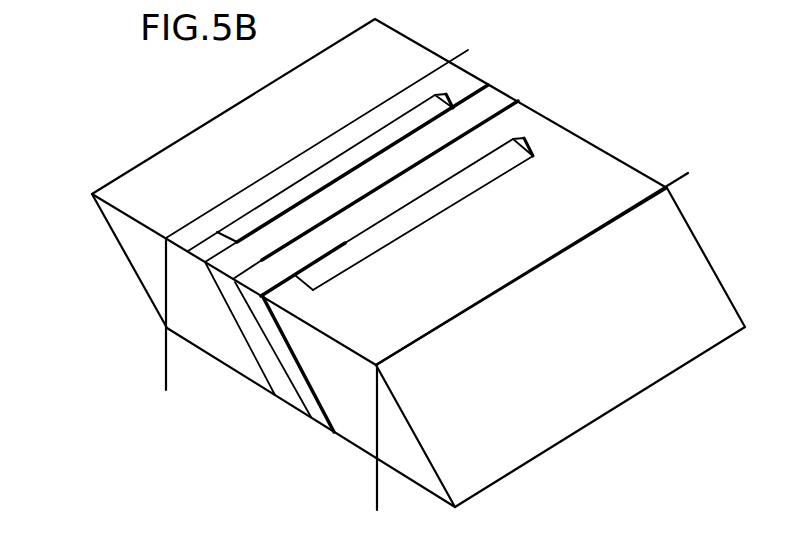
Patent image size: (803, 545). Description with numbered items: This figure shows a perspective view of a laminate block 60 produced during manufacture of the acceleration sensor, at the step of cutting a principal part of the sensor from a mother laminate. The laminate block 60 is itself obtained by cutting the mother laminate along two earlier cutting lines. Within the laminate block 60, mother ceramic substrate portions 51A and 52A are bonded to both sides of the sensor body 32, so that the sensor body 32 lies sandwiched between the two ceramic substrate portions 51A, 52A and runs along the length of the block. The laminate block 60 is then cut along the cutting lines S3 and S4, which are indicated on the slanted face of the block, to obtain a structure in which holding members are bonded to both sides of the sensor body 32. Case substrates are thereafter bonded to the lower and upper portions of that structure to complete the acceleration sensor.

The laminate block 60 is at (115, 180).
The mother ceramic substrate portion 51A is at (193, 157).
The mother ceramic substrate portion 52A is at (593, 167).
The sensor body 32 is at (508, 82).
The cutting line S3 is at (168, 378).
The cutting line S4 is at (377, 487).